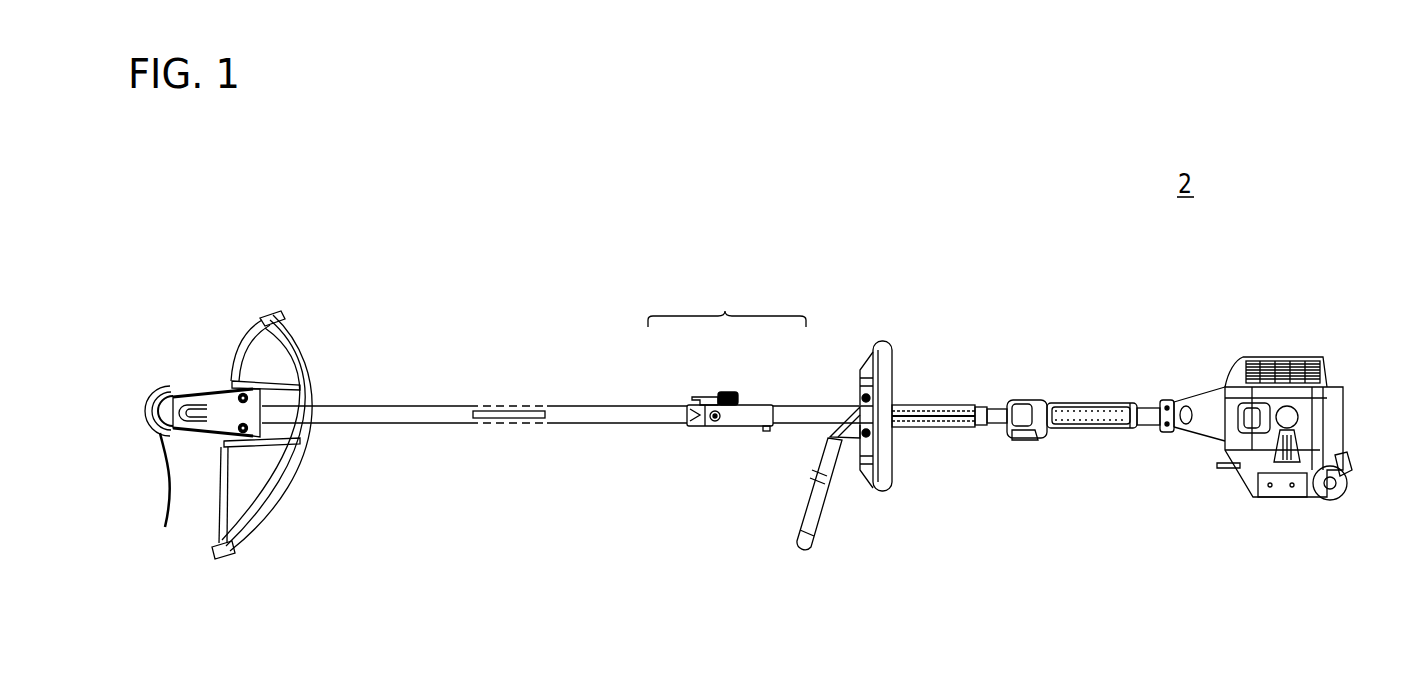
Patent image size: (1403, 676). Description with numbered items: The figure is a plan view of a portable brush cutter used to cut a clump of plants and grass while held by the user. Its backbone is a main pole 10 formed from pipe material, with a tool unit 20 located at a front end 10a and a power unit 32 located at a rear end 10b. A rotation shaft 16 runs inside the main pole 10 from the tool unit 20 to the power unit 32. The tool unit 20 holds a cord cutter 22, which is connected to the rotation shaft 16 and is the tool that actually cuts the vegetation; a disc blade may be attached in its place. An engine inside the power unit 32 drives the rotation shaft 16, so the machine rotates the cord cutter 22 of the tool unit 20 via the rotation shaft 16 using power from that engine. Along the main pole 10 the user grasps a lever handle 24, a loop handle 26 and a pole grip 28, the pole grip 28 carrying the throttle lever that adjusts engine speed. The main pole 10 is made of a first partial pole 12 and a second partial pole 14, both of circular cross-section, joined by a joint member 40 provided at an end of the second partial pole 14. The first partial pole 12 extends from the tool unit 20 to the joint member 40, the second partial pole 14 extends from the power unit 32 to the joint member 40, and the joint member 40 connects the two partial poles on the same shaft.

The main pole 10 is at (727, 304).
The front end 10a is at (265, 413).
The rear end 10b is at (1163, 432).
The first partial pole 12 is at (667, 410).
The second partial pole 14 is at (795, 410).
The rotation shaft 16 is at (507, 404).
The tool unit 20 is at (218, 388).
The cord cutter 22 is at (163, 524).
The lever handle 24 is at (815, 525).
The loop handle 26 is at (892, 380).
The pole grip 28 is at (1106, 402).
The power unit 32 is at (1296, 357).
The joint member 40 is at (748, 405).